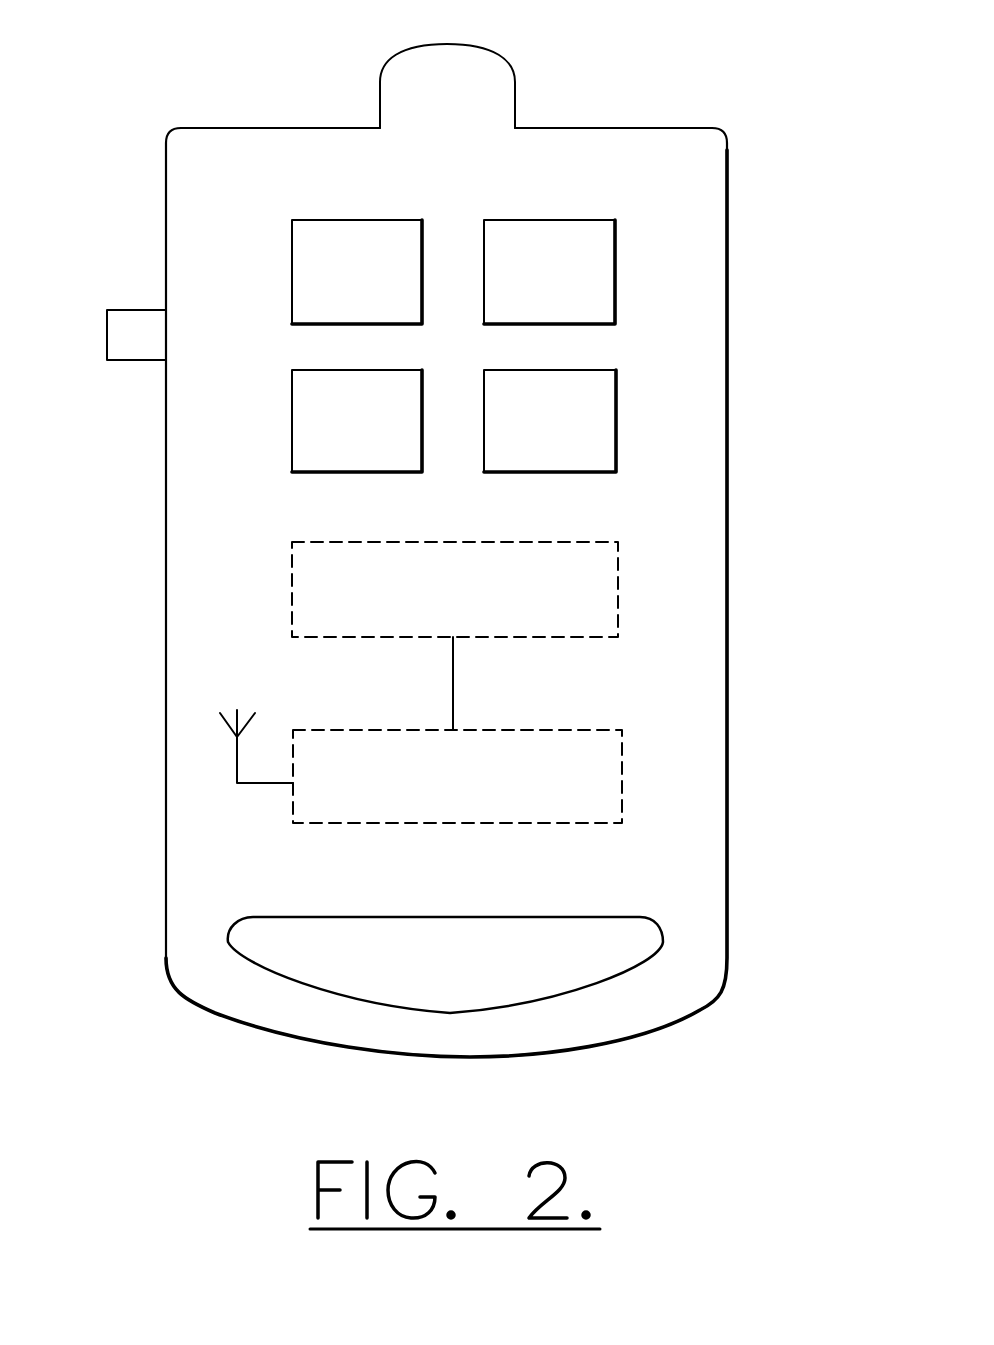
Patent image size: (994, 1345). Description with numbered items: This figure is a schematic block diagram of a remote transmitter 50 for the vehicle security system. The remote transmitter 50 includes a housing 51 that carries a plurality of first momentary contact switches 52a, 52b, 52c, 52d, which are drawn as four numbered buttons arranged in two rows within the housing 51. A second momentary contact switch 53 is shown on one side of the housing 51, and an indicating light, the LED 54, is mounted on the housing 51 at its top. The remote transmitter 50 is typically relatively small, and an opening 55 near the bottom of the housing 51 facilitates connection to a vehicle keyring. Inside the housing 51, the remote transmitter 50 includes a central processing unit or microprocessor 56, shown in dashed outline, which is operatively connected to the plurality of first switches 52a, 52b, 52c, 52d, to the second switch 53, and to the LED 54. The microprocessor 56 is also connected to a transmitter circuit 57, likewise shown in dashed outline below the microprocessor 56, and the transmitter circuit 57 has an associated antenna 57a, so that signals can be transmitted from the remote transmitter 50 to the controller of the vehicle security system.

The remote transmitter 50 is at (526, 558).
The housing 51 is at (728, 325).
The first momentary contact switch 52a is at (290, 270).
The first momentary contact switch 52b is at (647, 218).
The first momentary contact switch 52c is at (290, 410).
The first momentary contact switch 52d is at (645, 365).
The second momentary contact switch 53 is at (140, 310).
The LED 54 is at (514, 72).
The opening 55 is at (610, 917).
The central processing unit or microprocessor 56 is at (290, 575).
The transmitter circuit 57 is at (622, 740).
The antenna 57a is at (237, 768).